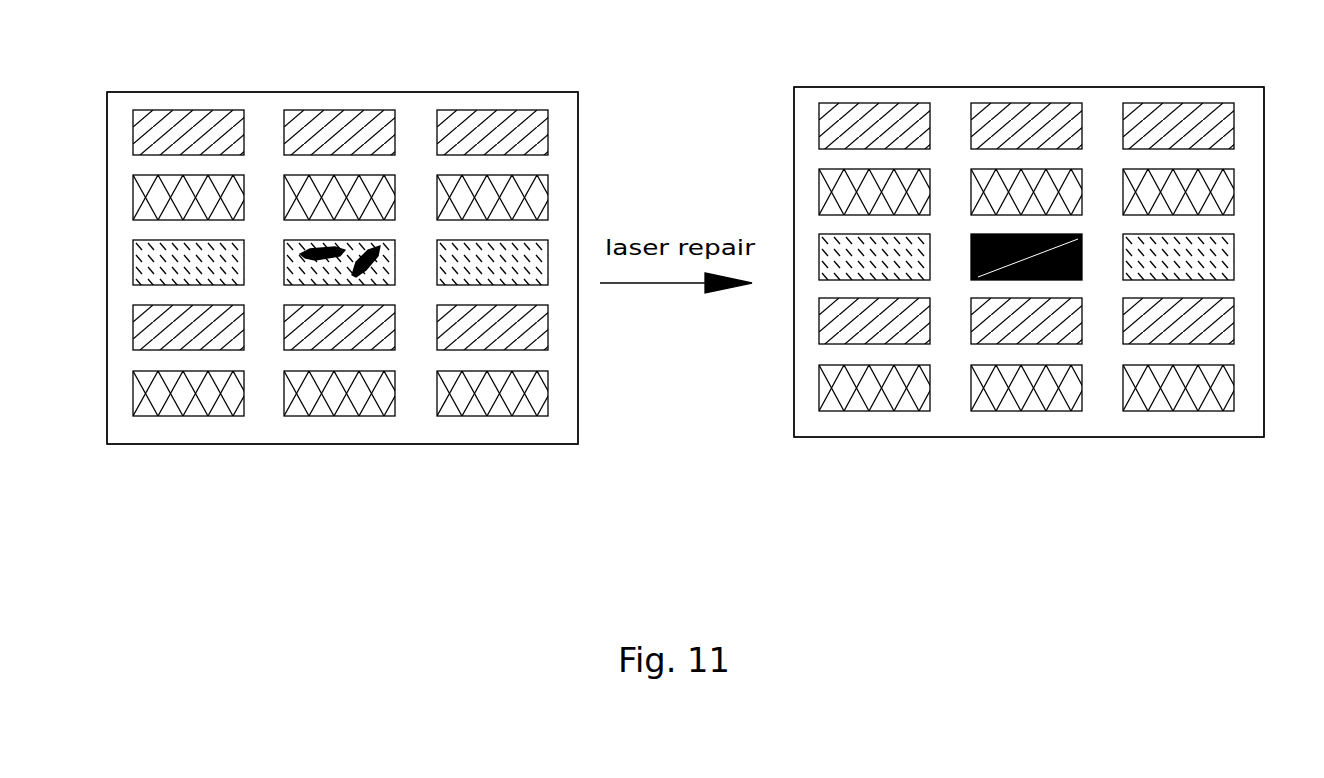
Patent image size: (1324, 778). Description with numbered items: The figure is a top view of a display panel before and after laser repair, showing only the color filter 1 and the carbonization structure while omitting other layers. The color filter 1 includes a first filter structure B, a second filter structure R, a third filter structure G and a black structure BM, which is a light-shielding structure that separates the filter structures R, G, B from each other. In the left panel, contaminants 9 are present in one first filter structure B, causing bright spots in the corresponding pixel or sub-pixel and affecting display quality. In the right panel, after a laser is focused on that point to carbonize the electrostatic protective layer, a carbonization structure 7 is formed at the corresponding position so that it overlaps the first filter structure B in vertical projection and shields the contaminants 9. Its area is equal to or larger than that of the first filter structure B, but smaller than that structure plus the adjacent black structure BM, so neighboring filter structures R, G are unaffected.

The color filter 1 is at (132, 446).
The black structure BM is at (567, 115).
The second filter structure R is at (143, 134).
The third filter structure G is at (143, 199).
The first filter structure B is at (143, 264).
The contaminants 9 is at (320, 252).
The carbonization structure 7 is at (972, 280).